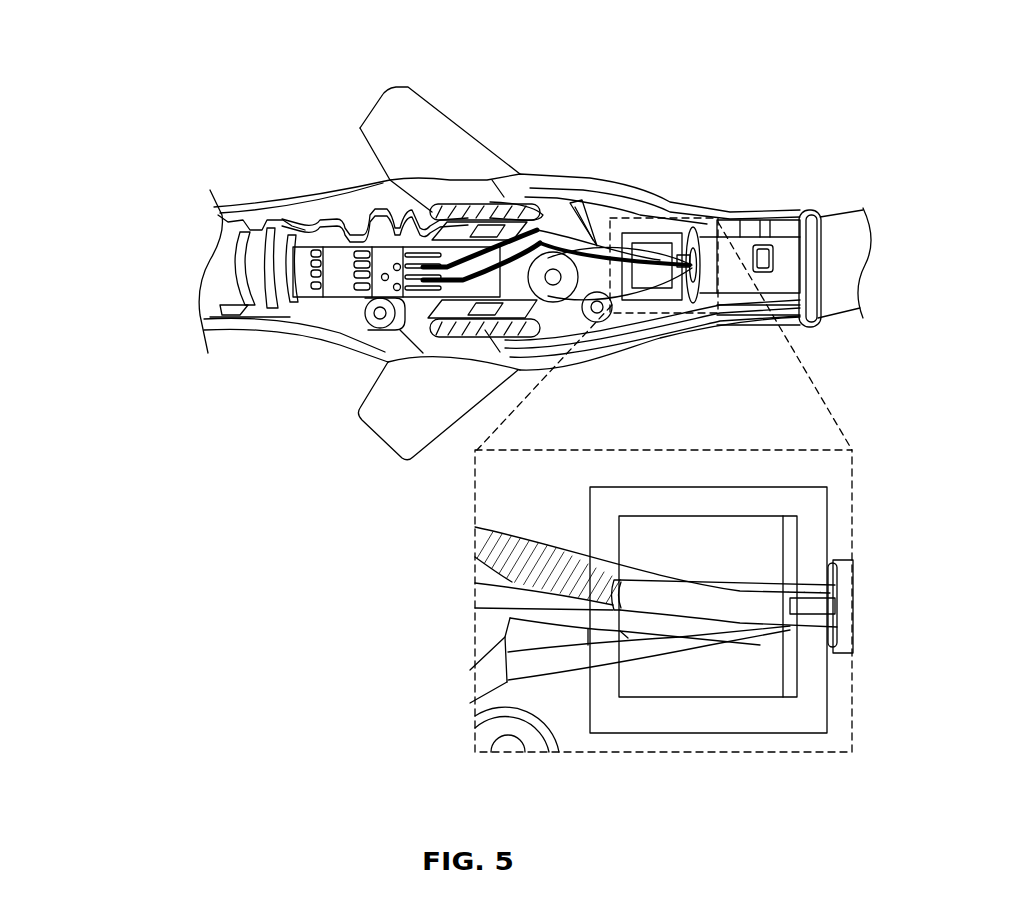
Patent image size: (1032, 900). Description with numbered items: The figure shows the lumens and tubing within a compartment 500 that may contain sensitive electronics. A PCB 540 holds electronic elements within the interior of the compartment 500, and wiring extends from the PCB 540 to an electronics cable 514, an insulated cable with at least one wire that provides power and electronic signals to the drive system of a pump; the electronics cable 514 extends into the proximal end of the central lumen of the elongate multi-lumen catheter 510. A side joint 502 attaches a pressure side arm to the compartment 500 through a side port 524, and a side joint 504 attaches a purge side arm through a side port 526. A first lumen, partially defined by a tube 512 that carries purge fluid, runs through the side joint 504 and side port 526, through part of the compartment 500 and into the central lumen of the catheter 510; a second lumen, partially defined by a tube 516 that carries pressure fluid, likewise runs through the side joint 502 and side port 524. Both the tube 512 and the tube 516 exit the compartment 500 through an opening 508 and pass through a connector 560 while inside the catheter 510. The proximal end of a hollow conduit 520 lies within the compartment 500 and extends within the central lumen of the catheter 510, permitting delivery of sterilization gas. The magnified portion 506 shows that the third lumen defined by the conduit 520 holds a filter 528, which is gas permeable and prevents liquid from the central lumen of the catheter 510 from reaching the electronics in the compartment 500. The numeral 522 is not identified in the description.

The compartment 500 is at (116, 54).
The side joint 502 is at (380, 96).
The side joint 504 is at (405, 460).
The magnified portion 506 is at (650, 216).
The opening 508 is at (805, 212).
The catheter 510 is at (842, 565).
The tube 512 is at (517, 694).
The electronics cable 514 is at (494, 524).
The tube 516 is at (472, 600).
The conduit 520 is at (658, 268).
The detail view 522 is at (778, 750).
The side port 524 is at (515, 178).
The side port 526 is at (520, 370).
The filter 528 is at (790, 607).
The PCB 540 is at (350, 310).
The connector 560 is at (840, 318).